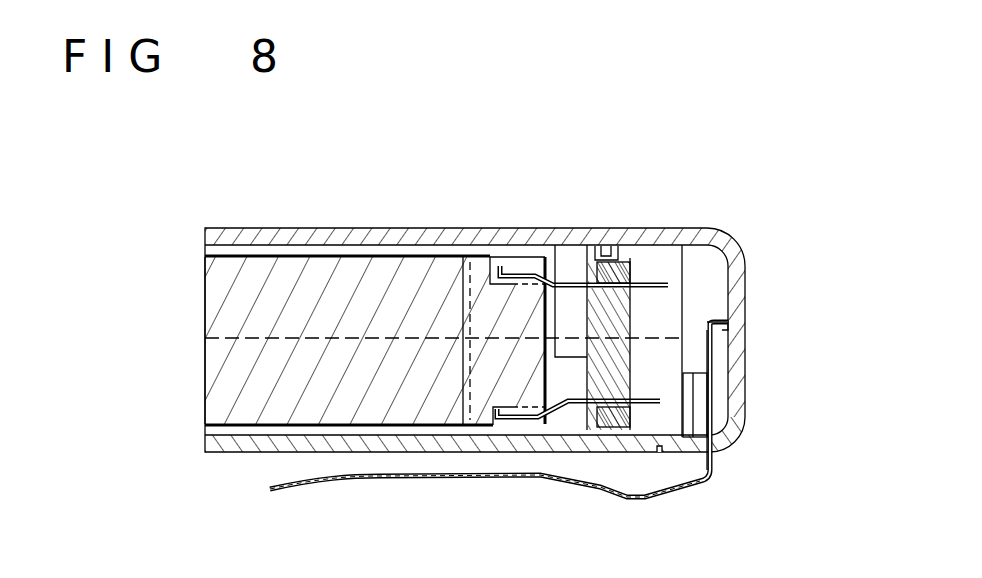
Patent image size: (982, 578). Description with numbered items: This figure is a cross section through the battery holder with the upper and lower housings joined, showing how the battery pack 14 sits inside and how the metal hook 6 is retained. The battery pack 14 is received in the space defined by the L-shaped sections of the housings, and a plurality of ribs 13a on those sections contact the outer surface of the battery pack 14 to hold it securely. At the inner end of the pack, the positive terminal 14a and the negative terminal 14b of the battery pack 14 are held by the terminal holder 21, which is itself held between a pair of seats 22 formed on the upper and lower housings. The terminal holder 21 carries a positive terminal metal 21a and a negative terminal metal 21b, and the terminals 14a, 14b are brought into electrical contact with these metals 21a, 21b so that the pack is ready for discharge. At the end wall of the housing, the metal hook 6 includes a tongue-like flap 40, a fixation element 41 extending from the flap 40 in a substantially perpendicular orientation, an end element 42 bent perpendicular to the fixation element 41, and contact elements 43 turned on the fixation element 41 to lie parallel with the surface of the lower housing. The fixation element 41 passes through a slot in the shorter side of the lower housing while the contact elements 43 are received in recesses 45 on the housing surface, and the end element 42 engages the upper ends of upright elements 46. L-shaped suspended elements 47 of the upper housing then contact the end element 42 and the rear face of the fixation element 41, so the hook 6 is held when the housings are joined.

The battery pack 14 is at (205, 282).
The ribs 13a is at (462, 258).
The negative terminal 14b is at (503, 262).
The positive terminal 14a is at (507, 455).
The negative terminal metal 21b is at (553, 258).
The positive terminal metal 21a is at (577, 427).
The seats 22 is at (590, 257).
The terminal holder 21 is at (636, 265).
The fixation element 41 is at (712, 400).
The tongue-like flap 40 is at (383, 480).
The metal hook 6 is at (315, 490).
The end element 42 is at (743, 323).
The upright elements 46 is at (723, 358).
The contact elements 43 is at (705, 485).
The recesses 45 is at (663, 457).
The L-shaped suspended elements 47 is at (712, 290).